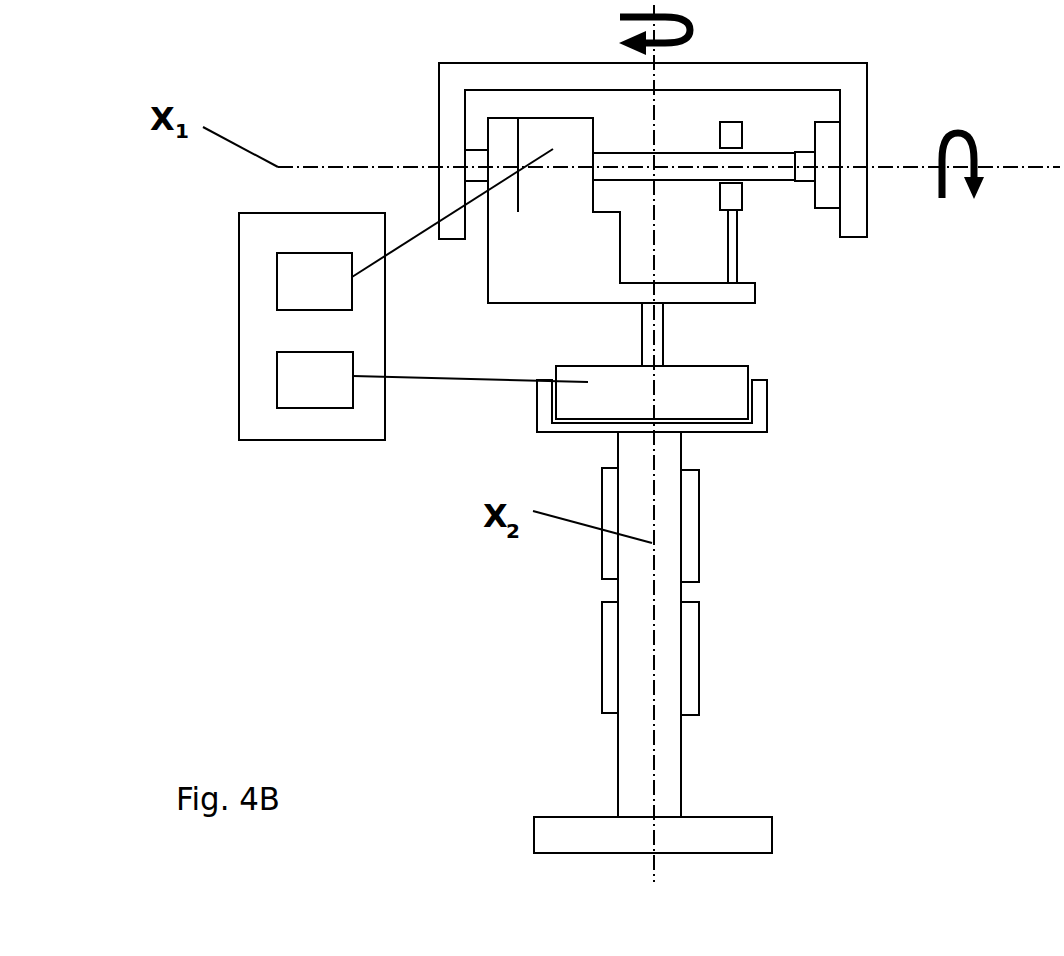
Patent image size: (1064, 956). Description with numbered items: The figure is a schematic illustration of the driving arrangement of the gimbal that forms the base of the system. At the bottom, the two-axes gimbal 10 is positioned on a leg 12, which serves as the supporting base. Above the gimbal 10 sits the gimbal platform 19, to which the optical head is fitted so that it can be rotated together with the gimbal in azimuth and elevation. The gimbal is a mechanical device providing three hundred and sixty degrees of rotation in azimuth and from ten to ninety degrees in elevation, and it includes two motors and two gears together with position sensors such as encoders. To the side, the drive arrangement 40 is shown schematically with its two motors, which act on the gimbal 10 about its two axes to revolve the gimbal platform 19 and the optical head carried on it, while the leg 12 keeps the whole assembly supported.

The gimbal platform 19 is at (879, 111).
The two-axes gimbal 10 is at (823, 395).
The leg 12 is at (678, 774).
The drive arrangement 40 is at (228, 341).